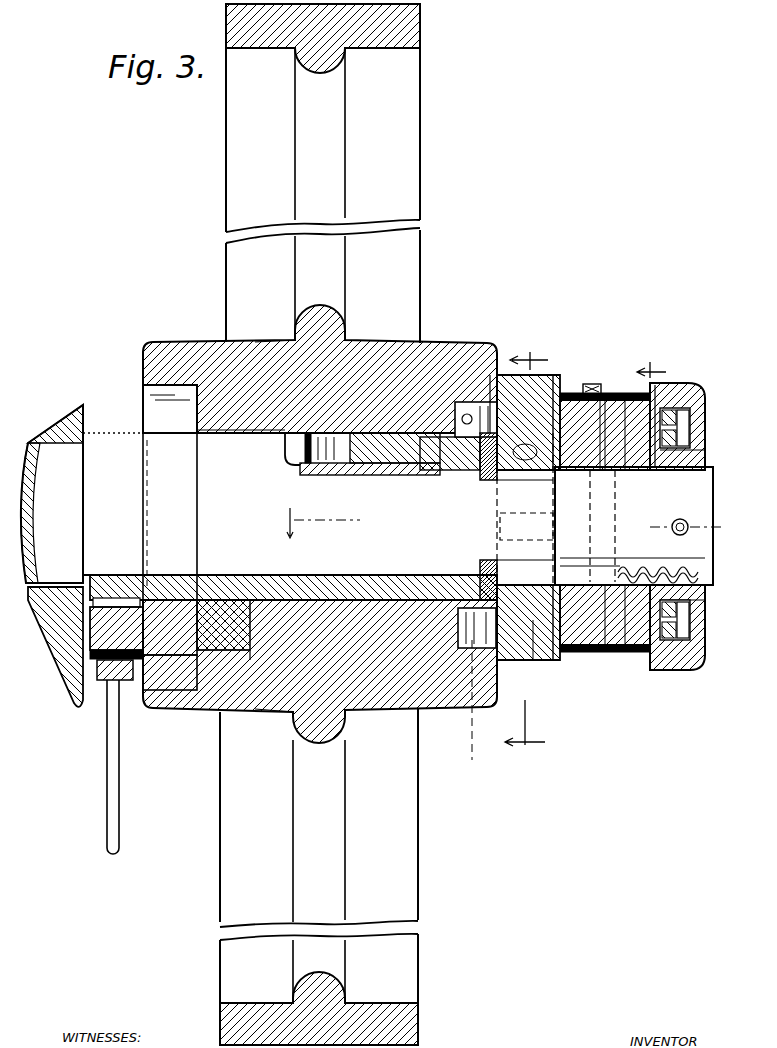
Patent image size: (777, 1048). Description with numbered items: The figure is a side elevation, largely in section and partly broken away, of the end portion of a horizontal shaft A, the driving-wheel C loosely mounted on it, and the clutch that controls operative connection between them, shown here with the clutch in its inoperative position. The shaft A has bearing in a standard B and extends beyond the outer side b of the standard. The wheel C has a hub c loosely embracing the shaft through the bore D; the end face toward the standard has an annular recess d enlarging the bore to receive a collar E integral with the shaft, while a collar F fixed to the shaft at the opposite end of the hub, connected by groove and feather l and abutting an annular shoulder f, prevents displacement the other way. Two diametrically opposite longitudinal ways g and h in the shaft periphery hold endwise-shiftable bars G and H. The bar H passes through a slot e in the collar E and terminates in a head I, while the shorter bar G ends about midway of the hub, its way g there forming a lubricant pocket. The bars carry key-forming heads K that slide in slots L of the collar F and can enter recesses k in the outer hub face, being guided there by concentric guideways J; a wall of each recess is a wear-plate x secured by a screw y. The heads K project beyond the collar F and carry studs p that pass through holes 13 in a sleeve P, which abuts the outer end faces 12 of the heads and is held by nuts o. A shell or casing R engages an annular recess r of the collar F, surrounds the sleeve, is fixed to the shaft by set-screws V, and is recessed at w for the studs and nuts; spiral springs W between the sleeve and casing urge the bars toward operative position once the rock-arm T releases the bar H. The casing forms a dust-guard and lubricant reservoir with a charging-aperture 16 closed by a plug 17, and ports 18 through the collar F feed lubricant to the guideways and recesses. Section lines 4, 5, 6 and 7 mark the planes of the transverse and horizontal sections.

The shaft A is at (367, 495).
The standard B is at (93, 637).
The driving-wheel C is at (418, 236).
The bore D is at (222, 432).
The collar E is at (150, 410).
The collar F is at (506, 380).
The endwise-shiftable bar G is at (420, 464).
The endwise-shiftable bar H is at (396, 590).
The head I is at (183, 642).
The guideway J is at (482, 552).
The key-forming head K is at (573, 394).
The slot L is at (552, 396).
The sleeve P is at (656, 390).
The shell or casing R is at (676, 400).
The rock-arm T is at (104, 712).
The set-screw V is at (688, 522).
The spiral spring W is at (678, 570).
The shoulder a is at (88, 478).
The outer side of standard b is at (92, 416).
The hub c is at (380, 346).
The annular recess d is at (193, 428).
The slot e is at (166, 662).
The annular shoulder f is at (494, 440).
The way g is at (345, 468).
The way h is at (118, 597).
The recess k is at (464, 402).
The groove and feather l is at (522, 522).
The nut o is at (698, 406).
The stud p is at (673, 386).
The annular recess r is at (556, 700).
The plate t is at (88, 668).
The recess w is at (686, 412).
The wear-plate x is at (450, 402).
The screw y is at (497, 396).
The section line 4 is at (526, 535).
The section line 5 is at (628, 694).
The section line 6 is at (505, 525).
The section line 7 is at (469, 544).
The outer end face 12 is at (612, 390).
The hole 13 is at (612, 462).
The charging-aperture 16 is at (591, 384).
The plug 17 is at (602, 398).
The port 18 is at (527, 676).